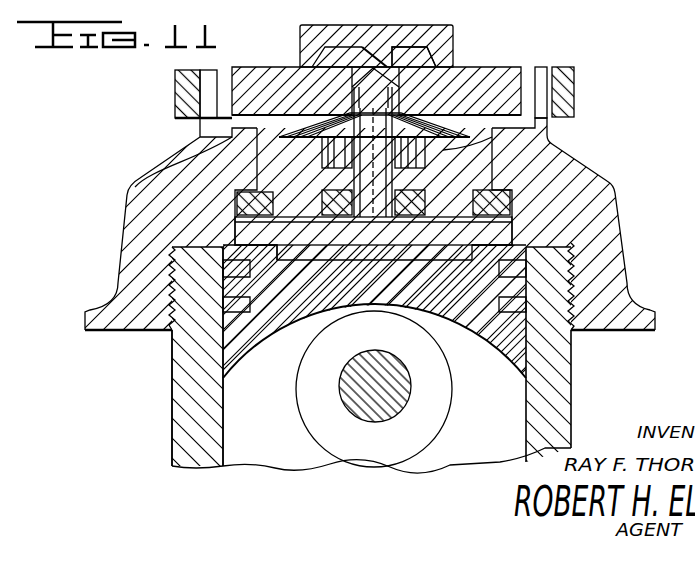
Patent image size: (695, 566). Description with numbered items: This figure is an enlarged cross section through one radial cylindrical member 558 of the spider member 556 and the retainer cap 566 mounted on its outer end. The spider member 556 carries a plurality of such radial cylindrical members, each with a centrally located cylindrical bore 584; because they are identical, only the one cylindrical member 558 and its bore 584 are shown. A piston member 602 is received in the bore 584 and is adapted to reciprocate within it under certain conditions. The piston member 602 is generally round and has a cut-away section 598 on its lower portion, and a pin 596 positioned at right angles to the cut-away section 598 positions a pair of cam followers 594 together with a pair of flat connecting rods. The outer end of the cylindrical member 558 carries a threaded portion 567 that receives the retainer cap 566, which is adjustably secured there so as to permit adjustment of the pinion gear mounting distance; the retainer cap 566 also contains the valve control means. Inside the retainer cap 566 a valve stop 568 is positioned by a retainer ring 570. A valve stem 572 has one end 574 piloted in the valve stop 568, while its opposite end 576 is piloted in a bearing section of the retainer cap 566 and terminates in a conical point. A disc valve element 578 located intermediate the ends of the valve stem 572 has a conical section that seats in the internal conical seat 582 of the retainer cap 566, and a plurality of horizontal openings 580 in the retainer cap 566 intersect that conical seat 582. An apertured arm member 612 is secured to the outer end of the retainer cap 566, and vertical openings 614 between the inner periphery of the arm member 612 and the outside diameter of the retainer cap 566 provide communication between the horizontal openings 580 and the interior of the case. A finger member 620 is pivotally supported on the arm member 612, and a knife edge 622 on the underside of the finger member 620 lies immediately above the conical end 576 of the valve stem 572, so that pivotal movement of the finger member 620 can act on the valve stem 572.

The spider member 556 is at (172, 405).
The radial cylindrical member 558 is at (566, 391).
The retainer cap 566 is at (121, 243).
The threaded portion 567 is at (574, 272).
The valve stop 568 is at (235, 187).
The retainer ring 570 is at (135, 187).
The valve stem 572 is at (332, 153).
The end of valve stem 574 is at (352, 182).
The opposite end of valve stem 576 is at (468, 66).
The disc valve element 578 is at (330, 118).
The horizontal openings 580 is at (540, 115).
The conical seat 582 is at (500, 150).
The cylindrical bore 584 is at (229, 466).
The cam followers 594 is at (422, 430).
The pin 596 is at (367, 409).
The cut-away section 598 is at (275, 333).
The piston member 602 is at (466, 326).
The arm member 612 is at (575, 88).
The vertical openings 614 is at (210, 72).
The finger member 620 is at (450, 38).
The knife edge 622 is at (380, 57).